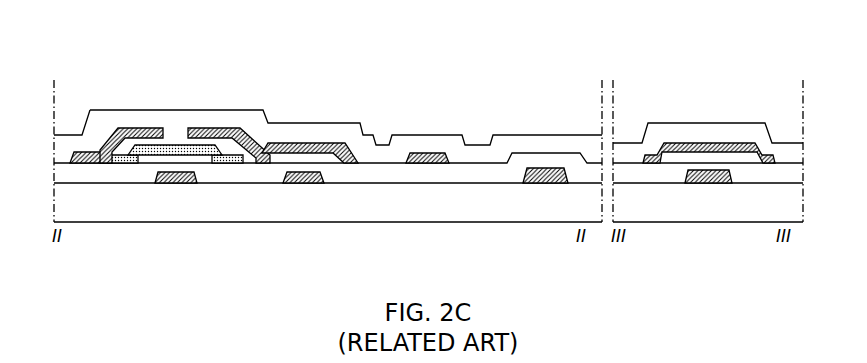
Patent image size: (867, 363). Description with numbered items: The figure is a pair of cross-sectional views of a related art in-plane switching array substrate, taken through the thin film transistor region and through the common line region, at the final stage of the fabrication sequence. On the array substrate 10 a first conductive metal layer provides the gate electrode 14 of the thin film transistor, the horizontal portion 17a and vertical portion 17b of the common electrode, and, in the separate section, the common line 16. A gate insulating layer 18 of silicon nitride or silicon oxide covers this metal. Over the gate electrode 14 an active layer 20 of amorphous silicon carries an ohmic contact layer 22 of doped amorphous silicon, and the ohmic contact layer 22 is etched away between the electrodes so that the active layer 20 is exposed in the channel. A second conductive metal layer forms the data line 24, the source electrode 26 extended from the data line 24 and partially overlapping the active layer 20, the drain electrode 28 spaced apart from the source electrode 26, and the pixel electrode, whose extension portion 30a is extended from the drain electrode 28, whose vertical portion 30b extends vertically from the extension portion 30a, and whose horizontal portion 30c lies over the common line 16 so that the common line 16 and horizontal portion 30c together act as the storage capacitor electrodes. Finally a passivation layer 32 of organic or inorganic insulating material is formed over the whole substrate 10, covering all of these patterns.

The array substrate 10 is at (319, 210).
The gate electrode 14 is at (173, 183).
The common line 16 is at (691, 170).
The horizontal portion of the common electrode 17a is at (303, 172).
The vertical portion of the common electrode 17b is at (552, 168).
The gate insulating layer 18 is at (634, 162).
The active layer 20 is at (176, 145).
The ohmic contact layer 22 is at (210, 152).
The data line 24 is at (81, 150).
The source electrode 26 is at (140, 128).
The drain electrode 28 is at (230, 128).
The extension portion of the pixel electrode 30a is at (336, 143).
The vertical portion of the pixel electrode 30b is at (443, 153).
The horizontal portion of the pixel electrode 30c is at (745, 143).
The passivation layer 32 is at (413, 135).